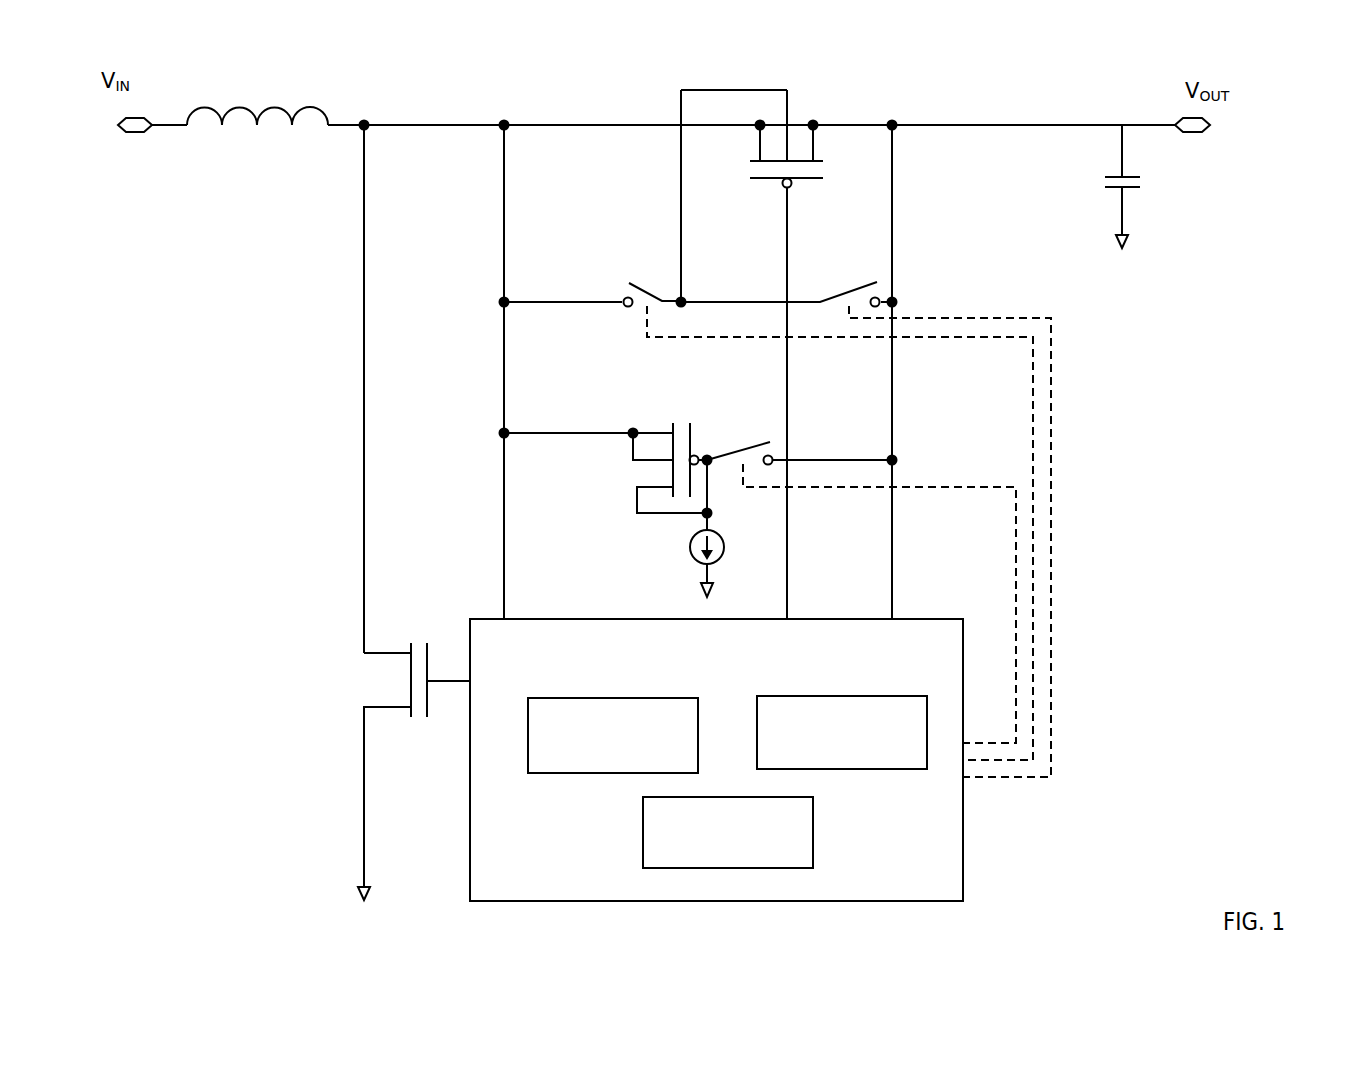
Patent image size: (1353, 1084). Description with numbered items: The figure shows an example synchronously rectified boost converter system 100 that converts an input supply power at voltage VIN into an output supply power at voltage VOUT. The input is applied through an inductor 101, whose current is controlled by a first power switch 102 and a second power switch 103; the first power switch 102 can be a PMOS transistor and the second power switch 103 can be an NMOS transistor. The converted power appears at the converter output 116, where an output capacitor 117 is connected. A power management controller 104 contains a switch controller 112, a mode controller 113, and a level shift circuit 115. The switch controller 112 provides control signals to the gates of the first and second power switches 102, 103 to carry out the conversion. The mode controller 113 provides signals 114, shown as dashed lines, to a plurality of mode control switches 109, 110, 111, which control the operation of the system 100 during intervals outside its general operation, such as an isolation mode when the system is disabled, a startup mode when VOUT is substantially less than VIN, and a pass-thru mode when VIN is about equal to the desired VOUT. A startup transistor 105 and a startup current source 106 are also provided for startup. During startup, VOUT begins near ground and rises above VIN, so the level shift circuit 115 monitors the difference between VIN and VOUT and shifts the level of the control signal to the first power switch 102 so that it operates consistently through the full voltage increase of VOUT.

The synchronously rectified boost converter system 100 is at (1177, 440).
The inductor 101 is at (296, 135).
The first power switch 102 is at (803, 183).
The second power switch 103 is at (428, 706).
The power management controller 104 is at (963, 847).
The startup transistor 105 is at (692, 443).
The startup current source 106 is at (690, 545).
The mode control switch 109 is at (660, 297).
The mode control switch 110 is at (866, 297).
The mode control switch 111 is at (732, 455).
The switch controller 112 is at (558, 698).
The mode controller 113 is at (823, 695).
The signals 114 is at (1096, 724).
The level shift circuit 115 is at (815, 815).
The converter output 116 is at (1170, 88).
The output capacitor 117 is at (1130, 190).